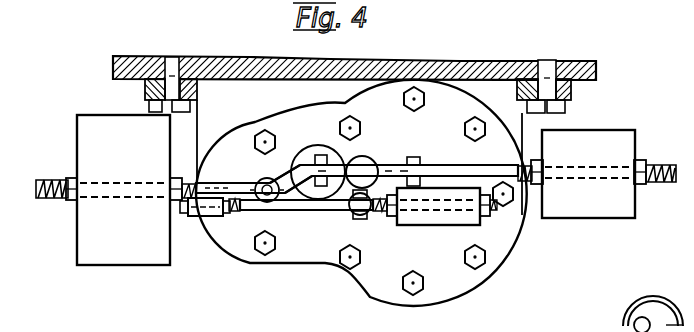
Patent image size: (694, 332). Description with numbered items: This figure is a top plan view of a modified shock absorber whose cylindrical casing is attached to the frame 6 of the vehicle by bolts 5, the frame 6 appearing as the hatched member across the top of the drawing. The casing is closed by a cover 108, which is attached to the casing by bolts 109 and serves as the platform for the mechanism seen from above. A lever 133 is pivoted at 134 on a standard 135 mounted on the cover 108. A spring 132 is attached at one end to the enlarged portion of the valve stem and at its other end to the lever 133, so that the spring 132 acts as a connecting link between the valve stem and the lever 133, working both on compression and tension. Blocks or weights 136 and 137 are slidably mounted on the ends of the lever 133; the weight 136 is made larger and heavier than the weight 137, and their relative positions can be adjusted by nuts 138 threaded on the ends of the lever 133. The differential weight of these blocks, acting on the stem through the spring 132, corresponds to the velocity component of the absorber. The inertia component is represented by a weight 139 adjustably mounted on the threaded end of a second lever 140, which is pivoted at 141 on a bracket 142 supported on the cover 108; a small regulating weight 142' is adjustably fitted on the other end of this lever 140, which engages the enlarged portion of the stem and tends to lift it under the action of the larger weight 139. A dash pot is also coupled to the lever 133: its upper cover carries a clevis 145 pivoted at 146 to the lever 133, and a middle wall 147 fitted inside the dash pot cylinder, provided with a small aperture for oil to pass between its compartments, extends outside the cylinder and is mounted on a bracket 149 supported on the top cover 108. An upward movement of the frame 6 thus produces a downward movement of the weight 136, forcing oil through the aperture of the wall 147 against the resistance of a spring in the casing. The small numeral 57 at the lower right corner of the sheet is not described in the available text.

The bolts 5 is at (573, 109).
The frame 6 is at (597, 70).
The bearing 57 is at (632, 325).
The cover 108 is at (503, 235).
The bolts 109 is at (478, 264).
The spring 132 is at (275, 204).
The lever 133 is at (385, 165).
The pivot 134 is at (416, 157).
The standard 135 is at (421, 160).
The weight 136 is at (130, 267).
The weight 137 is at (633, 131).
The nuts 138 is at (73, 179).
The weight 139 is at (431, 228).
The lever 140 is at (330, 212).
The pivot 141 is at (363, 216).
The bracket 142 is at (388, 260).
The regulating weight 142' is at (205, 241).
The clevis 145 is at (316, 156).
The pivot 146 is at (324, 156).
The middle wall 147 is at (288, 170).
The bracket 149 is at (364, 157).